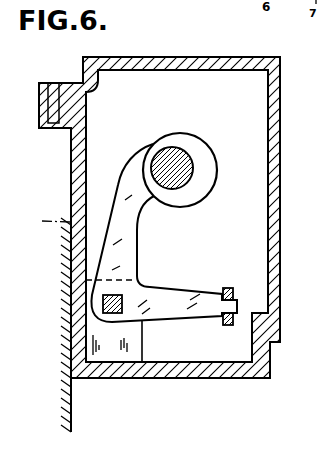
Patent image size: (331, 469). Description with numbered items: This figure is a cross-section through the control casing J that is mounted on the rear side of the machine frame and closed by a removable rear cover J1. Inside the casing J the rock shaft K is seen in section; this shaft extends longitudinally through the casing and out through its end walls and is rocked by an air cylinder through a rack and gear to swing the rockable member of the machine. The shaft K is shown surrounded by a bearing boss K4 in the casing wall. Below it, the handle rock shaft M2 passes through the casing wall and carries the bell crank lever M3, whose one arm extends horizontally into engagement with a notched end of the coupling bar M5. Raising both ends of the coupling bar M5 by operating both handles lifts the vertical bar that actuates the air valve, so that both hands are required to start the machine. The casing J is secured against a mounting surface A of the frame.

The casing J is at (194, 56).
The removable rear cover J1 is at (277, 155).
The bearing boss K4 is at (187, 133).
The rock shaft K is at (178, 165).
The bell crank lever M3 is at (133, 242).
The rock shaft M2 is at (103, 303).
The coupling bar M5 is at (232, 288).
The mounting surface A is at (60, 412).